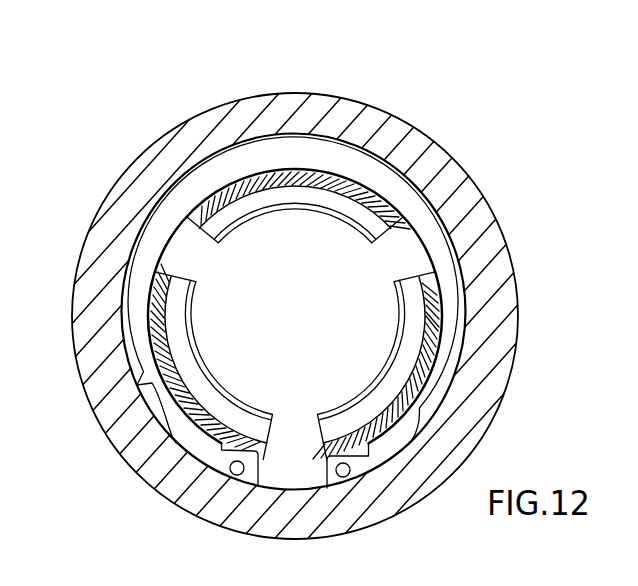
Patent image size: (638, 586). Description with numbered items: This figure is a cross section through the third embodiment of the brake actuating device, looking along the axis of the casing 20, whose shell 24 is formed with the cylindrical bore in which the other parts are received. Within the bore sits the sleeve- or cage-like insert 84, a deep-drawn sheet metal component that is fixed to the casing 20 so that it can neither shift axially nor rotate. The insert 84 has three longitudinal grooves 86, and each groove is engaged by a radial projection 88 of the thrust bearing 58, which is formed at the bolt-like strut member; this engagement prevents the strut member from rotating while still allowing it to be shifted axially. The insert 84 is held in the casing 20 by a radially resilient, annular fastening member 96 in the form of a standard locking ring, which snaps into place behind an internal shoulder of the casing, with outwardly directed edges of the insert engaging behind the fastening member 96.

The casing 20 is at (304, 84).
The shell 24 is at (353, 108).
The insert 84 is at (247, 170).
The longitudinal grooves 86 is at (178, 238).
The radial projection 88 is at (193, 257).
The thrust bearing 58 is at (307, 338).
The fastening member 96 is at (150, 386).